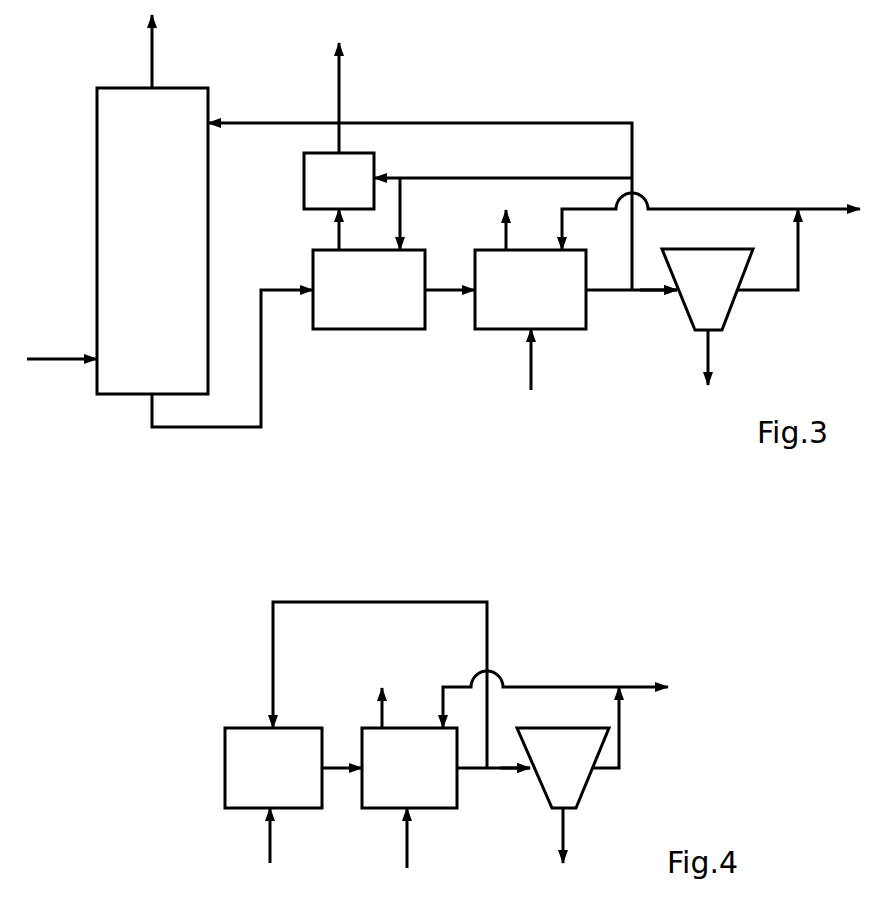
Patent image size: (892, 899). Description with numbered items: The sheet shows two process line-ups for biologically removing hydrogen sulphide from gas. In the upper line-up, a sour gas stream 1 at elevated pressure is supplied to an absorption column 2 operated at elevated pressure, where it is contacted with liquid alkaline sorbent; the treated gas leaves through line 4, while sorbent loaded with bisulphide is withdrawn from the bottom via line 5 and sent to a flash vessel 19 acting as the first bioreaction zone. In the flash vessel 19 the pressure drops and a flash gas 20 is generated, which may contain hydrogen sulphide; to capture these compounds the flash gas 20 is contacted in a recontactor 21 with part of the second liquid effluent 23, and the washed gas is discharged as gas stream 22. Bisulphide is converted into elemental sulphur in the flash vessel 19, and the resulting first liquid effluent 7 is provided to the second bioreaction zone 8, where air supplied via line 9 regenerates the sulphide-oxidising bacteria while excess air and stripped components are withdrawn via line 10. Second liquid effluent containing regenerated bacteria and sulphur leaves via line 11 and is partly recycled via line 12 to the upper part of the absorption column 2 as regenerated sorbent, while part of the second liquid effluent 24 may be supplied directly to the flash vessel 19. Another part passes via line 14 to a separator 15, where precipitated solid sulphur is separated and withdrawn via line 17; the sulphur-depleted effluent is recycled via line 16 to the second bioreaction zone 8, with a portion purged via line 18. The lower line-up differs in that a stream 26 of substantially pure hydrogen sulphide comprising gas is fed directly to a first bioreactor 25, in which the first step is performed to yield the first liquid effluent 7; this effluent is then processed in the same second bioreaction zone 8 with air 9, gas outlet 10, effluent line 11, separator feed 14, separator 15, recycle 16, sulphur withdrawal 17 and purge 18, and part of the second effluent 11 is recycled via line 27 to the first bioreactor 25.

In FIG. 3, the sour gas line 1 is at (58, 357).
In FIG. 3, the absorption column 2 is at (145, 302).
In FIG. 3, the treated gas line 4 is at (152, 42).
In FIG. 3, the loaded sorbent line 5 is at (262, 387).
In FIG. 3, the first liquid effluent line 7 is at (440, 292).
In FIG. 4, the first liquid effluent line 7 is at (337, 770).
In FIG. 3, the second bioreaction zone 8 is at (523, 302).
In FIG. 4, the second bioreaction zone 8 is at (403, 780).
In FIG. 3, the air supply line 9 is at (532, 363).
In FIG. 4, the air supply line 9 is at (409, 832).
In FIG. 3, the gaseous stream line 10 is at (504, 228).
In FIG. 4, the gaseous stream line 10 is at (380, 706).
In FIG. 3, the second liquid effluent line 11 is at (603, 292).
In FIG. 4, the second liquid effluent line 11 is at (473, 770).
In FIG. 3, the sorbent recycle line 12 is at (497, 123).
In FIG. 3, the separator feed line 14 is at (655, 292).
In FIG. 4, the separator feed line 14 is at (509, 770).
In FIG. 3, the separator 15 is at (694, 300).
In FIG. 4, the separator 15 is at (550, 780).
In FIG. 3, the sulphur-depleted effluent recycle line 16 is at (724, 205).
In FIG. 4, the sulphur-depleted effluent recycle line 16 is at (565, 683).
In FIG. 3, the sulphur withdrawal line 17 is at (710, 357).
In FIG. 4, the sulphur withdrawal line 17 is at (565, 835).
In FIG. 3, the purge line 18 is at (820, 205).
In FIG. 4, the purge line 18 is at (632, 683).
In FIG. 3, the flash vessel 19 is at (355, 302).
In FIG. 3, the flash gas 20 is at (338, 229).
In FIG. 3, the recontactor 21 is at (325, 194).
In FIG. 3, the washed gas stream 22 is at (340, 79).
In FIG. 3, the second liquid effluent to recontactor 23 is at (497, 178).
In FIG. 3, the second liquid effluent to flash vessel 24 is at (402, 205).
In FIG. 4, the first bioreactor 25 is at (259, 780).
In FIG. 4, the hydrogen sulphide gas stream 26 is at (265, 840).
In FIG. 4, the effluent recycle line to first bioreactor 27 is at (390, 602).